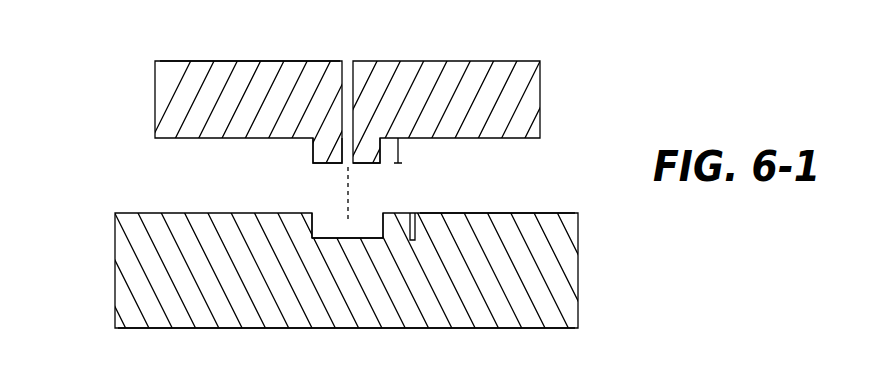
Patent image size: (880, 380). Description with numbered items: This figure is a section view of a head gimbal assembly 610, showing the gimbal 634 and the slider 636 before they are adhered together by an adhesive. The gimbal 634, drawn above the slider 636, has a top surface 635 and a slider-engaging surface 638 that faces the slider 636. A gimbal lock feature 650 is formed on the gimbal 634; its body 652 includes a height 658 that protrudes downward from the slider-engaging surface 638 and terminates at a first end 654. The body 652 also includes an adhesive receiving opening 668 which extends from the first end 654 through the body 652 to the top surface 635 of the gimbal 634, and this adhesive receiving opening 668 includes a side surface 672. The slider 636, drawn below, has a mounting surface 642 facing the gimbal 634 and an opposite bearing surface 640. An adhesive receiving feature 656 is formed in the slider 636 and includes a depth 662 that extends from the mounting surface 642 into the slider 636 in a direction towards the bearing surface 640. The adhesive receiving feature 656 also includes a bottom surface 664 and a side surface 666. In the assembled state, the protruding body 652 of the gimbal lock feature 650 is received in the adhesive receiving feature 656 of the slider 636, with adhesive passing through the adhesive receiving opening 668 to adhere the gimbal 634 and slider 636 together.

The head gimbal assembly 610 is at (616, 69).
The gimbal 634 is at (153, 110).
The top surface 635 is at (253, 61).
The slider 636 is at (115, 230).
The slider-engaging surface 638 is at (538, 141).
The bearing surface 640 is at (553, 328).
The mounting surface 642 is at (522, 213).
The gimbal lock feature 650 is at (278, 151).
The body 652 is at (332, 160).
The first end 654 is at (363, 164).
The adhesive receiving feature 656 is at (327, 253).
The height 658 is at (401, 139).
The depth 662 is at (415, 228).
The bottom surface 664 is at (380, 240).
The side surface 666 is at (312, 223).
The adhesive receiving opening 668 is at (365, 114).
The side surface 672 is at (358, 61).